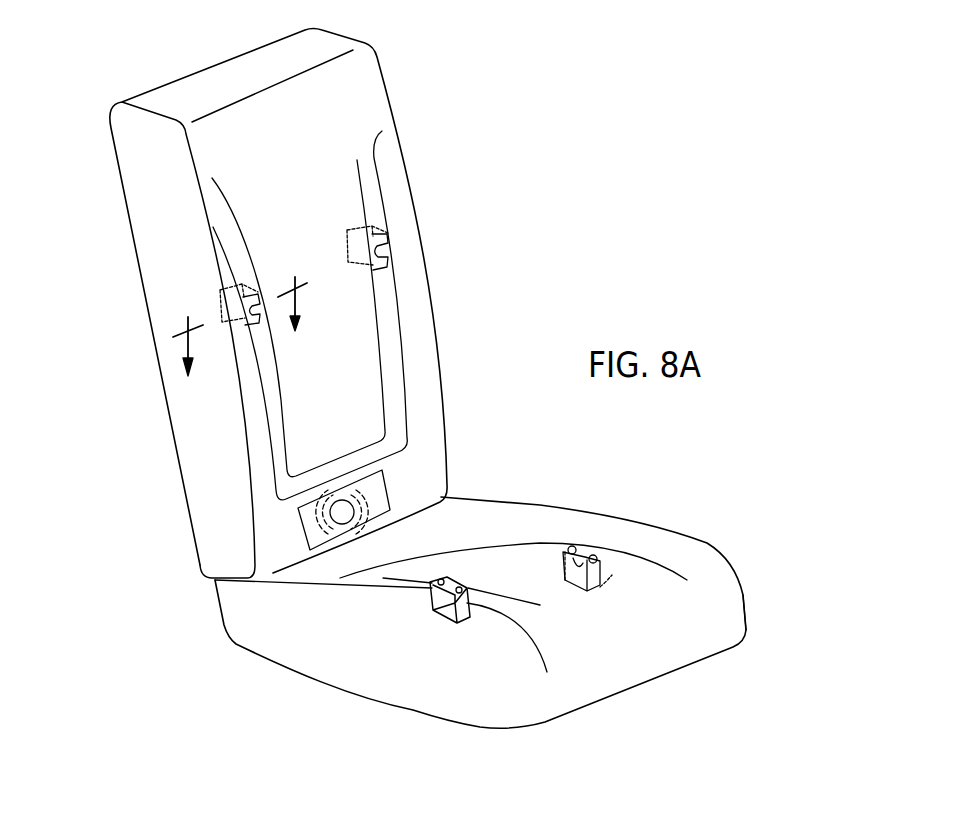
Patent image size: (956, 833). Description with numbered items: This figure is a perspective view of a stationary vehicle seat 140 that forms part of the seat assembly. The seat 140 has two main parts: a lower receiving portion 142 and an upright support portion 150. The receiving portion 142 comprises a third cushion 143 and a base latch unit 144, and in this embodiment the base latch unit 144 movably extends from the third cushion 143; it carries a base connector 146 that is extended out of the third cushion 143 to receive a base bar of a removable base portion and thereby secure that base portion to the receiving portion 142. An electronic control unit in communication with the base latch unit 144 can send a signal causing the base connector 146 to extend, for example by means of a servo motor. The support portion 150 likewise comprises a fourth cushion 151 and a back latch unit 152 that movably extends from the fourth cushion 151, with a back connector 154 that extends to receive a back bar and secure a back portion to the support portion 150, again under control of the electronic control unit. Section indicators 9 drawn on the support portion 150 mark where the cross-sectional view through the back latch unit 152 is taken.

The stationary vehicle seat 140 is at (154, 61).
The support portion 150 is at (160, 157).
The fourth cushion 151 is at (162, 200).
The back latch unit 152 is at (350, 262).
The back connector 154 is at (357, 227).
The receiving portion 142 is at (720, 580).
The third cushion 143 is at (723, 631).
The base latch unit 144 is at (572, 547).
The base connector 146 is at (612, 575).
The section line 9 is at (235, 309).